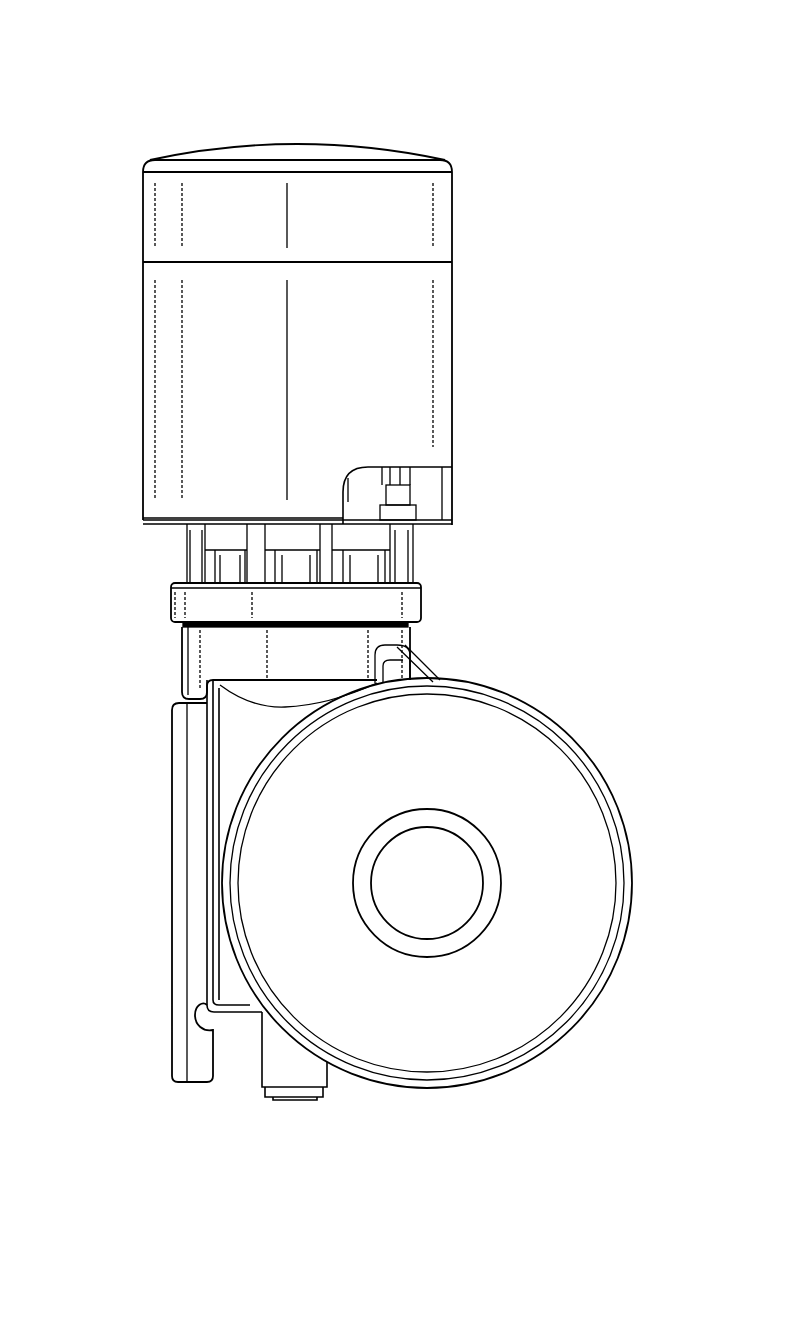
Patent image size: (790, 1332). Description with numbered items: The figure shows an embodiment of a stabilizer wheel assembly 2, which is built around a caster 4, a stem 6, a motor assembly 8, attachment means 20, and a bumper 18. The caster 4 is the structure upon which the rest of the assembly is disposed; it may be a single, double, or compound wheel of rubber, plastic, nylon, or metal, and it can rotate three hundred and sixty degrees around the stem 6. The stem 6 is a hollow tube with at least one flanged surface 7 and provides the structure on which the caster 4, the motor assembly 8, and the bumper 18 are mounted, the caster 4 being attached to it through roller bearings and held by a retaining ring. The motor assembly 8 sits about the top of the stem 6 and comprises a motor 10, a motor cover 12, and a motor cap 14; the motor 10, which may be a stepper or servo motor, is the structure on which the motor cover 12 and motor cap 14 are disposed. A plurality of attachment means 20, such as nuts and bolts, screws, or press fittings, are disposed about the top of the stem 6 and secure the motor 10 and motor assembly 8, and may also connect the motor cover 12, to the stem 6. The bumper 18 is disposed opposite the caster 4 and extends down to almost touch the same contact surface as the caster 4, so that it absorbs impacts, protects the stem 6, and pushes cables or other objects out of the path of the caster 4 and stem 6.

The stabilizer wheel assembly 2 is at (422, 58).
The caster 4 is at (578, 1028).
The stem 6 is at (210, 668).
The flanged surface 7 is at (410, 603).
The motor assembly 8 is at (565, 313).
The motor 10 is at (368, 493).
The motor cover 12 is at (412, 378).
The motor cap 14 is at (445, 193).
The bumper 18 is at (178, 840).
The attachment means 20 is at (222, 540).